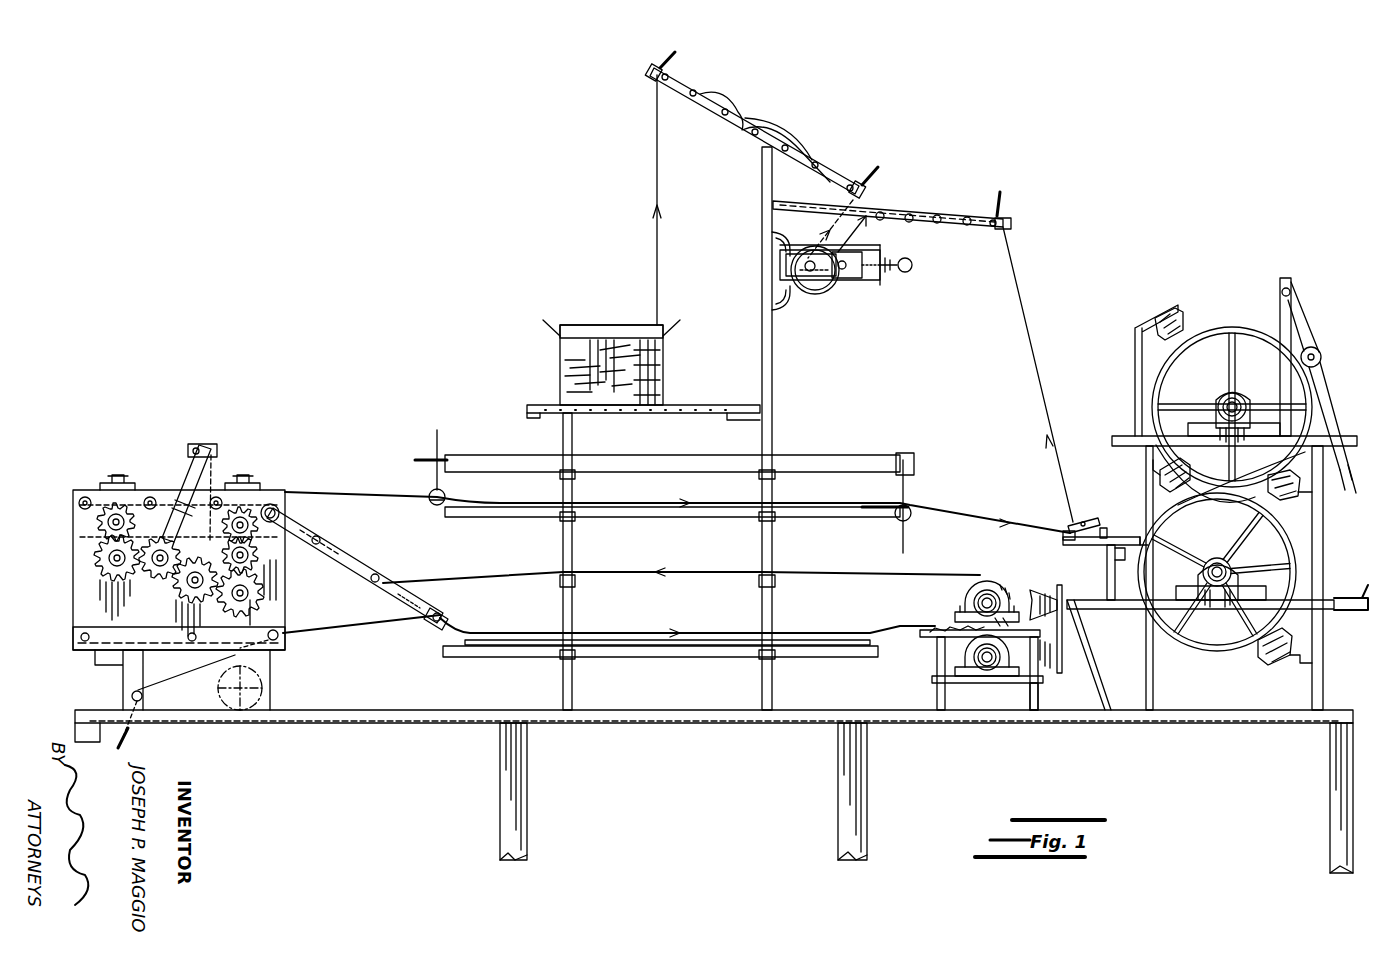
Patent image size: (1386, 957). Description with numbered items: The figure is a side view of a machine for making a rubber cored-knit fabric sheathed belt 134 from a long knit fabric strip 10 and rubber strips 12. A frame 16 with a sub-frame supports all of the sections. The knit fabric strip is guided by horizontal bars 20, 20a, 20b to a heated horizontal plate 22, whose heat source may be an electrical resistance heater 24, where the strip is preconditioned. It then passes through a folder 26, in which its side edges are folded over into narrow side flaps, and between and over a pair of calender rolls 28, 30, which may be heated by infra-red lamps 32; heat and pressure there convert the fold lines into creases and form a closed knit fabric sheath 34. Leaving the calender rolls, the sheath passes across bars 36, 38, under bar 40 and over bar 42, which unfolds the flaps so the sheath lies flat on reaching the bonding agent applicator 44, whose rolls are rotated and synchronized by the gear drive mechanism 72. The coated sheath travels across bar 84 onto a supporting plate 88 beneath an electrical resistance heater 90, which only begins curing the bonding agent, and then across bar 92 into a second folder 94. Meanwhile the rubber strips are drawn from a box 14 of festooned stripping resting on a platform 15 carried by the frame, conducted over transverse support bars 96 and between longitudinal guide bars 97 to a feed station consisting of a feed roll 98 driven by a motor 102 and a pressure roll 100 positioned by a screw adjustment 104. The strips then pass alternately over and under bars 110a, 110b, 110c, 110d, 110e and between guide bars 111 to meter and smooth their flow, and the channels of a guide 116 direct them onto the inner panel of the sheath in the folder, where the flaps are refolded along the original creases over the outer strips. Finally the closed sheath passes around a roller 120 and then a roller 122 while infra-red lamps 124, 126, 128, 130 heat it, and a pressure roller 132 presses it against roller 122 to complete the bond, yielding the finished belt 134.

The knit fabric strip 10 is at (405, 640).
The rubber strips 12 is at (654, 185).
The box of festooned rubber stripping 14 is at (560, 362).
The platform 15 is at (690, 414).
The frame 16 is at (522, 786).
The horizontal bar 20 is at (143, 697).
The horizontal bar 20a is at (278, 640).
The horizontal bar 20b is at (443, 613).
The heated horizontal plate 22 is at (826, 652).
The electrical resistance heater 24 is at (694, 658).
The folder 26 is at (895, 628).
The calender roll 28 is at (1012, 665).
The calender roll 30 is at (1000, 580).
The infra-red lamps 32 is at (1050, 650).
The closed knit fabric sheath 34 is at (965, 575).
The bar 36 is at (760, 585).
The bar 38 is at (574, 585).
The bar 40 is at (378, 578).
The bar 42 is at (320, 541).
The bonding agent applicator 44 is at (147, 470).
The gear drive mechanism 72 is at (155, 585).
The bar 84 is at (430, 505).
The supporting plate 88 is at (492, 518).
The electrical resistance heater 90 is at (840, 456).
The bar 92 is at (910, 519).
The folder 94 is at (1125, 536).
The transverse support bars 96 is at (760, 135).
The longitudinal guide bars 97 is at (742, 135).
The feed roll 98 is at (816, 294).
The pressure roll 100 is at (855, 280).
The motor 102 is at (800, 300).
The screw adjustment 104 is at (903, 272).
The bar 110a is at (883, 214).
The bar 110b is at (912, 214).
The bar 110c is at (940, 216).
The bar 110d is at (970, 218).
The bar 110e is at (1011, 224).
The guide bars 111 is at (978, 235).
The guide 116 is at (1055, 515).
The roller 120 is at (1297, 560).
The roller 122 is at (1236, 328).
The infra-red lamp 124 is at (1272, 662).
The infra-red lamp 126 is at (1158, 480).
The infra-red lamp 128 is at (1183, 318).
The infra-red lamp 130 is at (1302, 480).
The pressure roller 132 is at (1313, 346).
The rubber cored-knit fabric sheathed belt 134 is at (1330, 405).